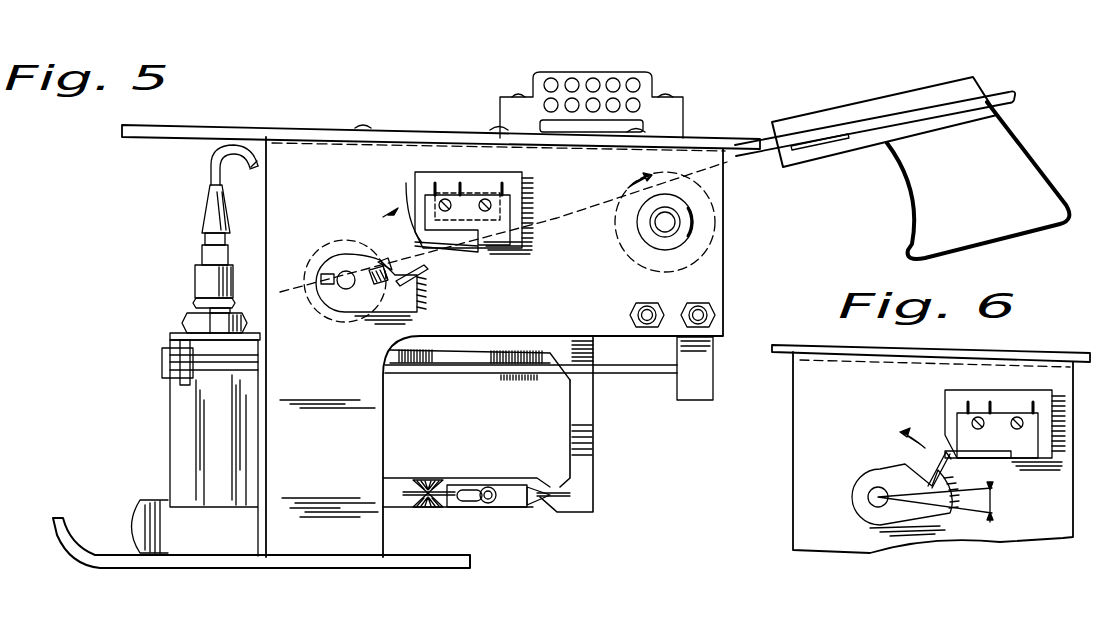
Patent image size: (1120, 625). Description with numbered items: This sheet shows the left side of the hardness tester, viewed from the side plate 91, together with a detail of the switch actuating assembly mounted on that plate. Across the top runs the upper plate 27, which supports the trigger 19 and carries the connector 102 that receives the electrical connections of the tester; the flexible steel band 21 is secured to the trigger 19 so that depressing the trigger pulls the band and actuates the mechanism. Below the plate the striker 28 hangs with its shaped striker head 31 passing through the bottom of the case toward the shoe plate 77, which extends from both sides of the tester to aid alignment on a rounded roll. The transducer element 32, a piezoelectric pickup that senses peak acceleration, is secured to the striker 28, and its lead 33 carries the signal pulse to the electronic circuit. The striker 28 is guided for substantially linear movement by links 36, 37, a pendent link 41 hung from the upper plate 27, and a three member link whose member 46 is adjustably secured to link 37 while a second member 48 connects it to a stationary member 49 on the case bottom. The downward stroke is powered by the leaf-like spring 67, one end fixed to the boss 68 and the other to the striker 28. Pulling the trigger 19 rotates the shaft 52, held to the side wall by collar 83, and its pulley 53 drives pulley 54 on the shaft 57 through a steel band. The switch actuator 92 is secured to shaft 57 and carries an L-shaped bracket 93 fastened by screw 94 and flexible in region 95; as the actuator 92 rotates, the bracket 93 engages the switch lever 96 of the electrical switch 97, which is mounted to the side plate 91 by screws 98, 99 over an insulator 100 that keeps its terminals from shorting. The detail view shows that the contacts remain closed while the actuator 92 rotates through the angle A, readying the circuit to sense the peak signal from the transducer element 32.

In FIG. 5, the trigger 19 is at (912, 205).
In FIG. 5, the flexible steel band 21 is at (764, 150).
In FIG. 5, the upper plate 27 is at (325, 125).
In FIG. 5, the striker 28 is at (170, 430).
In FIG. 5, the striker head 31 is at (145, 500).
In FIG. 5, the transducer element 32 is at (193, 277).
In FIG. 5, the lead 33 is at (211, 169).
In FIG. 5, the link 36 is at (516, 378).
In FIG. 5, the link 37 is at (432, 486).
In FIG. 5, the pendent link 41 is at (585, 470).
In FIG. 5, the member of three member link 46 is at (512, 508).
In FIG. 5, the second member 48 is at (394, 508).
In FIG. 5, the stationary member 49 is at (433, 507).
In FIG. 5, the shaft 52 is at (655, 223).
In FIG. 5, the pulley 53 is at (616, 263).
In FIG. 5, the pulley 54 is at (328, 281).
In FIG. 5, the shaft 57 is at (343, 284).
In FIG. 6, the shaft 57 is at (868, 499).
In FIG. 5, the spring 67 is at (640, 373).
In FIG. 5, the boss 68 is at (695, 400).
In FIG. 5, the shoe plate 77 is at (108, 568).
In FIG. 5, the collar 83 is at (684, 211).
In FIG. 5, the side plate 91 is at (724, 264).
In FIG. 6, the side plate 91 is at (805, 412).
In FIG. 5, the switch actuator 92 is at (336, 255).
In FIG. 6, the switch actuator 92 is at (858, 486).
In FIG. 5, the L-shaped bracket 93 is at (430, 276).
In FIG. 6, the L-shaped bracket 93 is at (950, 470).
In FIG. 5, the screw 94 is at (386, 266).
In FIG. 5, the flexible region 95 is at (392, 262).
In FIG. 5, the switch lever 96 is at (406, 212).
In FIG. 6, the switch lever 96 is at (988, 458).
In FIG. 5, the electrical switch 97 is at (508, 216).
In FIG. 6, the electrical switch 97 is at (1010, 440).
In FIG. 5, the screw 98 is at (446, 199).
In FIG. 6, the screw 98 is at (978, 416).
In FIG. 5, the screw 99 is at (487, 199).
In FIG. 6, the screw 99 is at (1018, 416).
In FIG. 5, the insulator 100 is at (415, 178).
In FIG. 6, the insulator 100 is at (1046, 400).
In FIG. 5, the connector 102 is at (656, 95).
In FIG. 6, the angle A is at (935, 502).